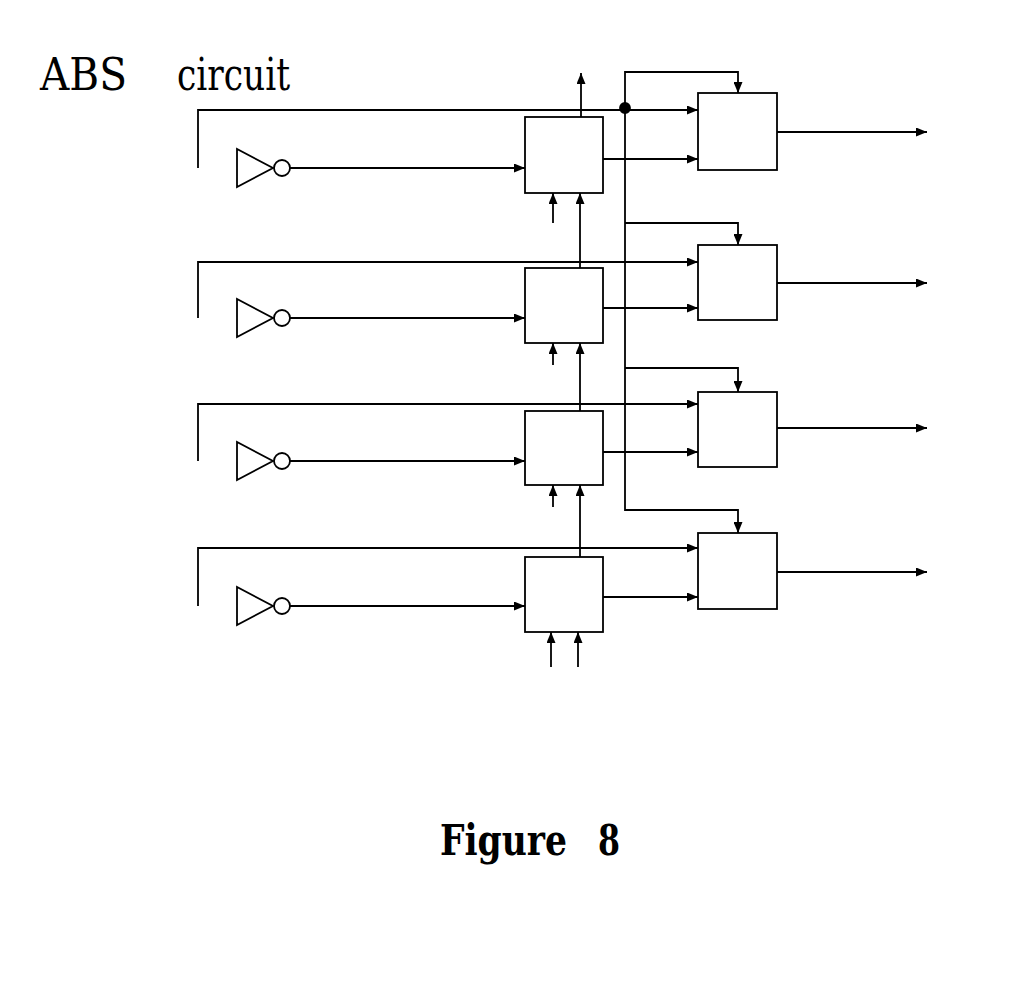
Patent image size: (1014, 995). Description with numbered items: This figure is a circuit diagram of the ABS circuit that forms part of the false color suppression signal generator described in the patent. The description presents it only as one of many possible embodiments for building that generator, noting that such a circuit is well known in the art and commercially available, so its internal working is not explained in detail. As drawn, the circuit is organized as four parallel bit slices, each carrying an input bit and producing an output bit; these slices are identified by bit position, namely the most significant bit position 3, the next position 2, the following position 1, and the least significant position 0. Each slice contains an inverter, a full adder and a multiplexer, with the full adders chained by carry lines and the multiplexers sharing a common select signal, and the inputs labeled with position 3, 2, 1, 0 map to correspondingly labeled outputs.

The input bit i3 path (inverter, full adder, multiplexer, output o3) 3 is at (237, 168).
The input bit i2 path (inverter, full adder, multiplexer, output o2) 2 is at (237, 318).
The input bit i1 path and constant 1 input 1 is at (237, 461).
The input bit i0 path and constant 0 inputs 0 is at (237, 606).